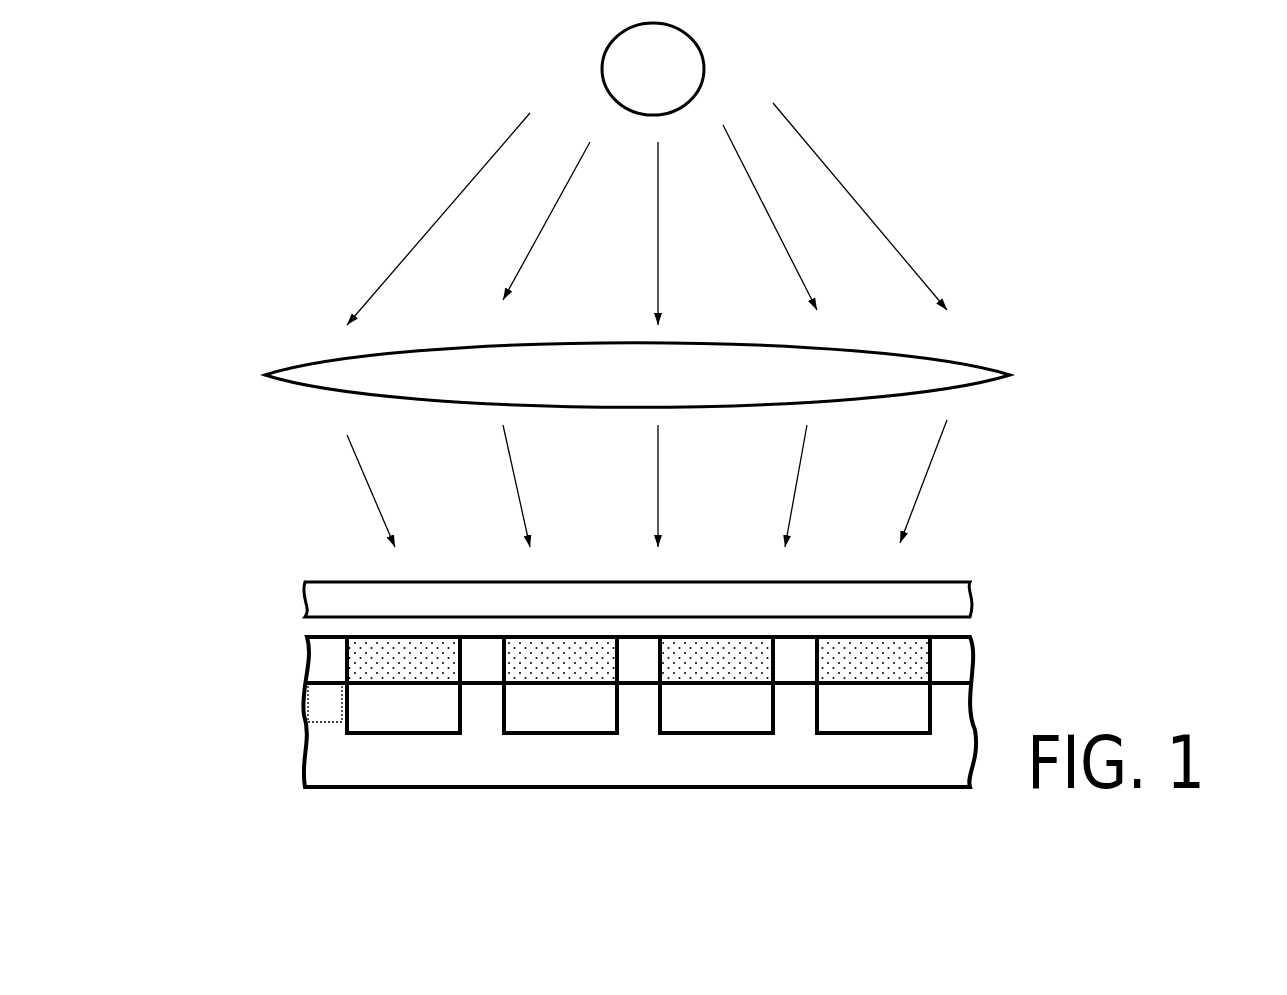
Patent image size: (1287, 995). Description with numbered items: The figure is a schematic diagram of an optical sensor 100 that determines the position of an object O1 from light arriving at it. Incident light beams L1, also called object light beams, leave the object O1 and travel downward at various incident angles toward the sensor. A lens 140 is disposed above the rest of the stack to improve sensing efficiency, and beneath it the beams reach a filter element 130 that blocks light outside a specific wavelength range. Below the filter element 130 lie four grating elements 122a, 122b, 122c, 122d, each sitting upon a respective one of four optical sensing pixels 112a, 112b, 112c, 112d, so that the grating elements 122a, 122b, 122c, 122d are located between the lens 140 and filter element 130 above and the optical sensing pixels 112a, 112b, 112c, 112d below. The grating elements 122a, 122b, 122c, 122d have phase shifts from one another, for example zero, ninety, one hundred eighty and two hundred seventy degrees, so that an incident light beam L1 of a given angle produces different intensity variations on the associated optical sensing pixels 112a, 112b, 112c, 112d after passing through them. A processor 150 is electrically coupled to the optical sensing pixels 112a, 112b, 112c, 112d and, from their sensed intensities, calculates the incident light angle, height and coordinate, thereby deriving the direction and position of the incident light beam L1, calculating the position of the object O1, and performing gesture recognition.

The object O1 is at (703, 57).
The incident light beam L1 is at (875, 222).
The optical sensor 100 is at (1105, 428).
The lens 140 is at (1010, 375).
The filter element 130 is at (938, 602).
The grating element 122a is at (367, 658).
The grating element 122b is at (515, 675).
The grating element 122c is at (678, 673).
The grating element 122d is at (880, 668).
The optical sensing pixel 112a is at (382, 712).
The optical sensing pixel 112b is at (570, 712).
The optical sensing pixel 112c is at (728, 708).
The optical sensing pixel 112d is at (878, 705).
The processor 150 is at (320, 707).